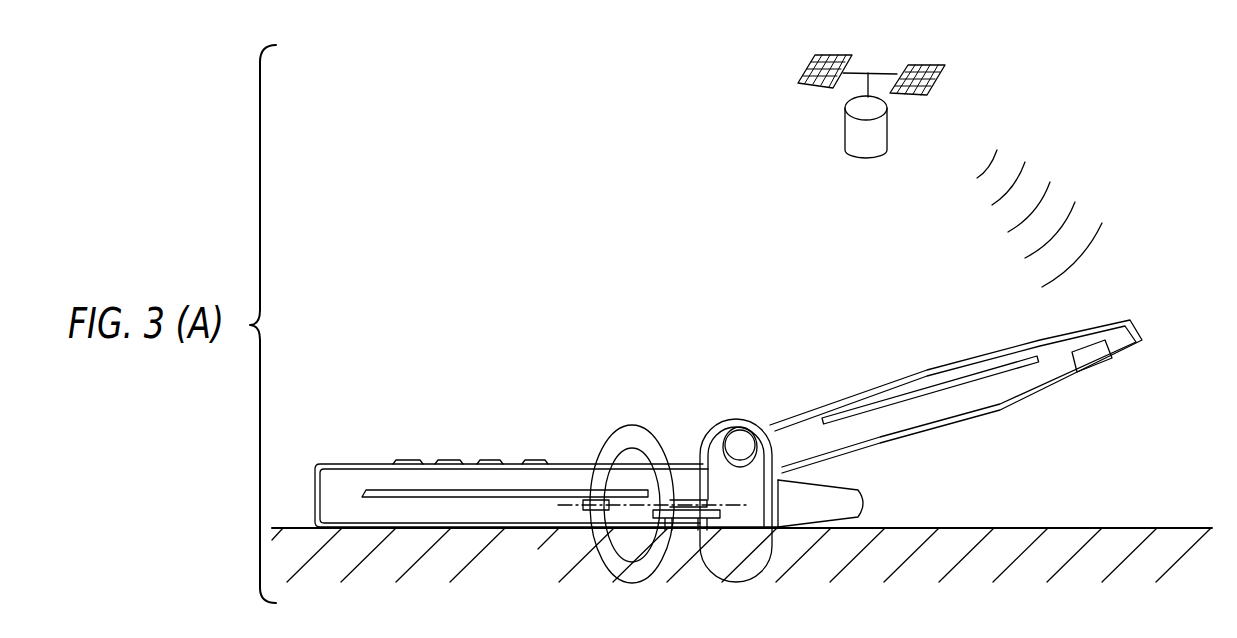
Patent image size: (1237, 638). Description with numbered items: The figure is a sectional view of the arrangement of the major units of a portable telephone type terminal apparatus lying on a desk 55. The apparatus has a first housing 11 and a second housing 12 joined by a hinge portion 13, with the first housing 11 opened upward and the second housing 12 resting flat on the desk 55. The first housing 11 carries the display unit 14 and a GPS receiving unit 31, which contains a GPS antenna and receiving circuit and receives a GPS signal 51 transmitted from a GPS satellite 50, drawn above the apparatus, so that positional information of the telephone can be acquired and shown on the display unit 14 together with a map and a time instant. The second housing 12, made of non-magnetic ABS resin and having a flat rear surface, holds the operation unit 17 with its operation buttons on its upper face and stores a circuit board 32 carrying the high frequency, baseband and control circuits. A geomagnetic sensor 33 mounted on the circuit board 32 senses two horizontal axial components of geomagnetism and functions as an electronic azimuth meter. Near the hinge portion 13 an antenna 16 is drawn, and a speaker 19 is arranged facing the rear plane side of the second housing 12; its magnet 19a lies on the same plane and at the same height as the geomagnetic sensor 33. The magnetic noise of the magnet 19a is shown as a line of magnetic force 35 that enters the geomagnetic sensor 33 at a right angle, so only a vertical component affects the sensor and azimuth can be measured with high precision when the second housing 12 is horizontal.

The first housing 11 is at (1000, 412).
The second housing 12 is at (352, 464).
The hinge portion 13 is at (742, 440).
The display unit 14 is at (925, 374).
The antenna 16 is at (837, 500).
The operation unit 17 is at (453, 460).
The speaker 19 is at (728, 560).
The magnet 19a is at (697, 466).
The GPS receiving unit 31 is at (1090, 357).
The circuit board 32 is at (575, 489).
The geomagnetic sensor 33 is at (588, 512).
The line of magnetic force 35 is at (641, 425).
The GPS satellite 50 is at (858, 130).
The GPS signal 51 is at (1066, 192).
The desk 55 is at (1125, 528).